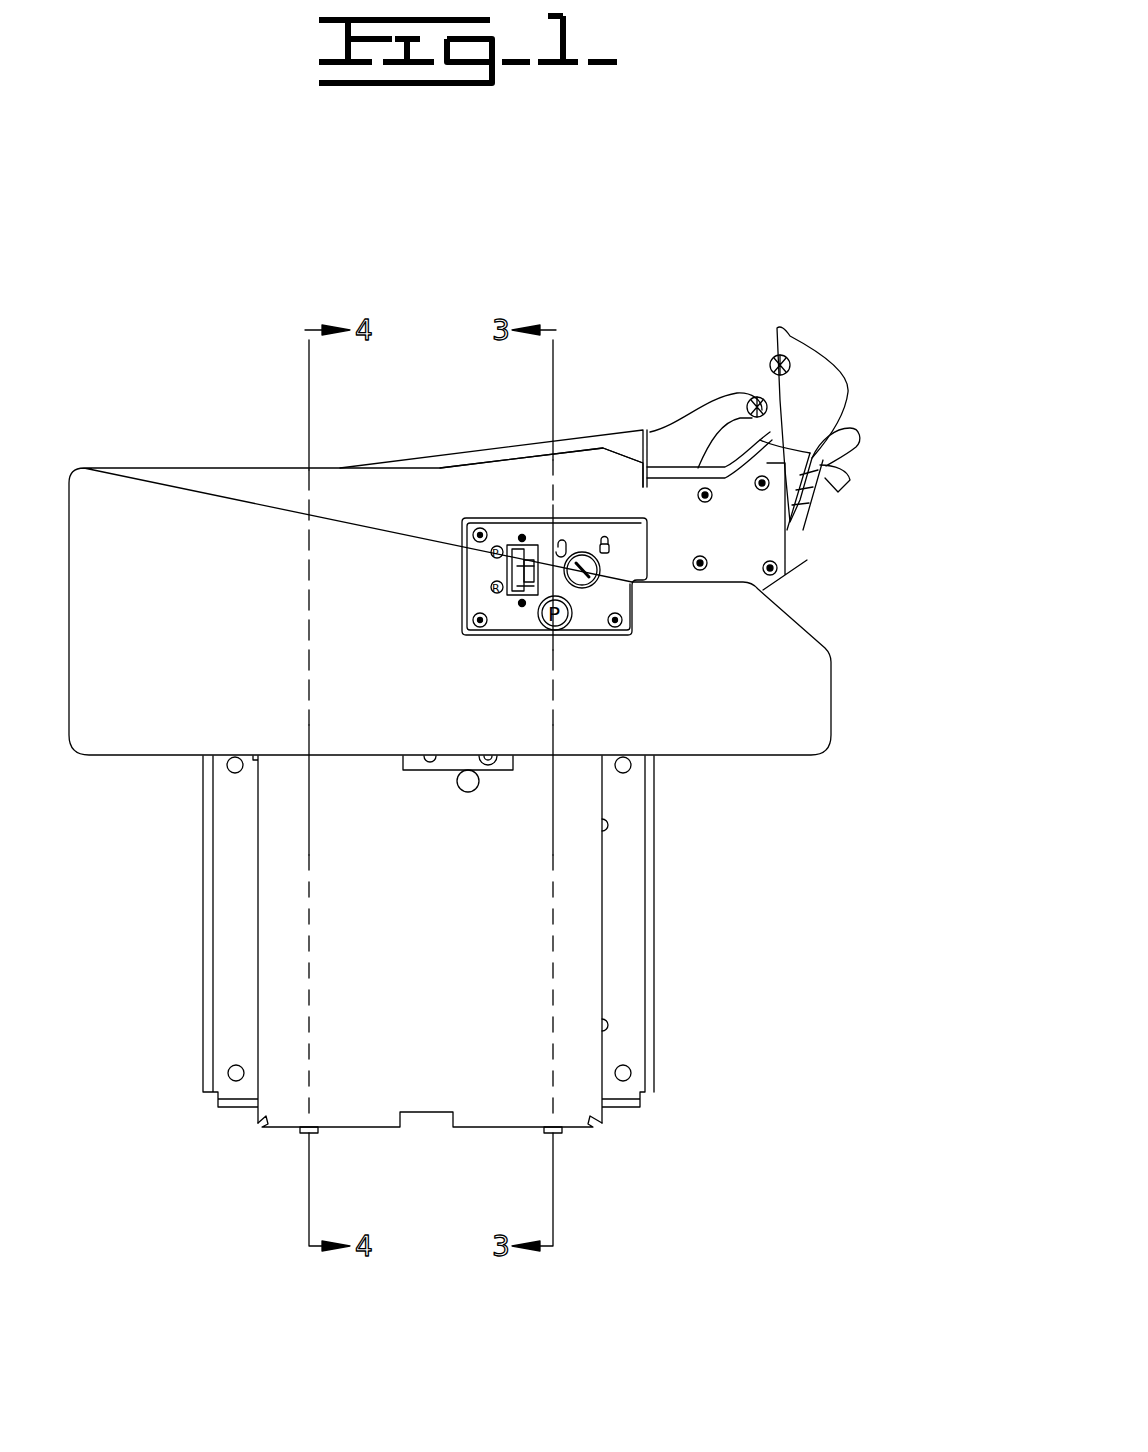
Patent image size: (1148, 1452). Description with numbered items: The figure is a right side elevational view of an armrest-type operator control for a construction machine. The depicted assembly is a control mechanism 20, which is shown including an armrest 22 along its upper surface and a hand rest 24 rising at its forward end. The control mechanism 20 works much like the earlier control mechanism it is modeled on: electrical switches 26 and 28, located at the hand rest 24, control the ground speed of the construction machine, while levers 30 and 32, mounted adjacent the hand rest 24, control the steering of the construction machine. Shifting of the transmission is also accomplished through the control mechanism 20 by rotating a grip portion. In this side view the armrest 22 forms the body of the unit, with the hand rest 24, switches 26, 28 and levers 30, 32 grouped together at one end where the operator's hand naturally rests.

The control mechanism 20 is at (310, 440).
The armrest 22 is at (411, 455).
The hand rest 24 is at (820, 377).
The electrical switch 26 is at (776, 357).
The electrical switch 28 is at (750, 400).
The lever 30 is at (838, 442).
The lever 32 is at (820, 478).